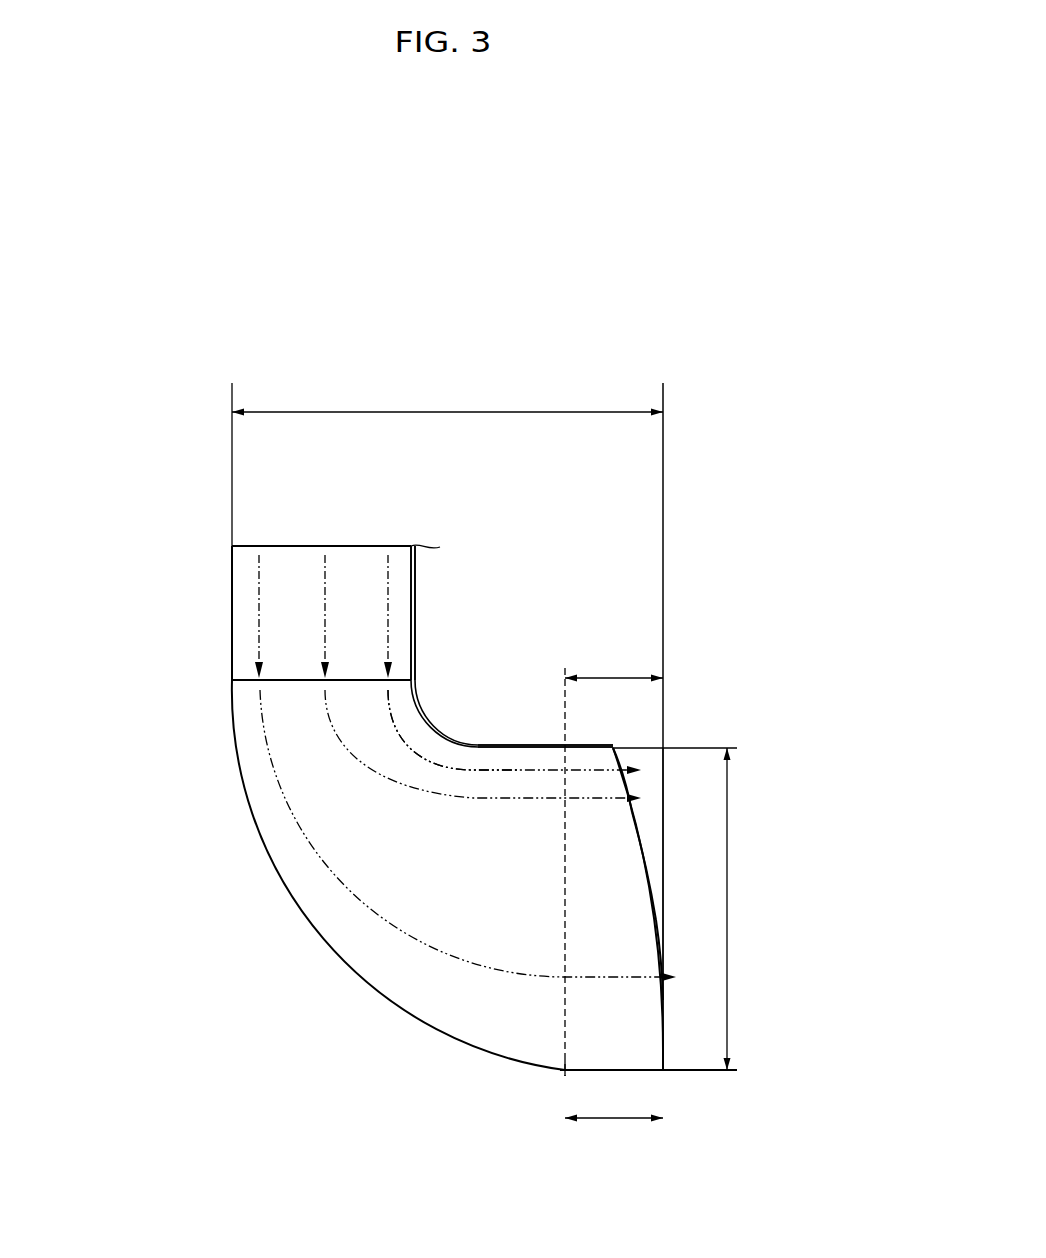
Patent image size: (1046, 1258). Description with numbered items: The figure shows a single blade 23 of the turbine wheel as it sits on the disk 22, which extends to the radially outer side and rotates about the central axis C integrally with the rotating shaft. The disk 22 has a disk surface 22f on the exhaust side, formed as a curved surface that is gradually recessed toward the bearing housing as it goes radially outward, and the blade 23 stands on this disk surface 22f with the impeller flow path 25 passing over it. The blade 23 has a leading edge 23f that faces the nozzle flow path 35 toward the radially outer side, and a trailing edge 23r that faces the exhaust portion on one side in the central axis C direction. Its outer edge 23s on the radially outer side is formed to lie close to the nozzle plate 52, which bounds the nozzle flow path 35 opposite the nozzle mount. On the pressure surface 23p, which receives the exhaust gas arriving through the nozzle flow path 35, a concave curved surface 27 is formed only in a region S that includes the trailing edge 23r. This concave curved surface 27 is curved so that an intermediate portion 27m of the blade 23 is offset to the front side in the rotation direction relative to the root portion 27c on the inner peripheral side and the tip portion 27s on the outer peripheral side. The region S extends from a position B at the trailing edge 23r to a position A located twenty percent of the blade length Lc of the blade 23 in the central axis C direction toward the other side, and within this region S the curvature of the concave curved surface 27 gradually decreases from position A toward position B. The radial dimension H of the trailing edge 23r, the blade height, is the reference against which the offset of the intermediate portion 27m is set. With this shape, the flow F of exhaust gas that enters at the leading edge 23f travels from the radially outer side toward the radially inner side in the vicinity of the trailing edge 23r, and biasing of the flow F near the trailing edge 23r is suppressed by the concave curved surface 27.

The nozzle flow path 35 is at (352, 583).
The blade 23 is at (433, 730).
The leading edge 23f is at (393, 677).
The outer edge 23s is at (527, 746).
The pressure surface 23p is at (627, 835).
The concave curved surface 27 is at (717, 909).
The tip portion 27s is at (617, 748).
The trailing edge 23r is at (652, 878).
The intermediate portion 27m is at (627, 930).
The root portion 27c is at (672, 1072).
The disk surface 22f is at (295, 899).
The disk 22 is at (332, 875).
The impeller flow path 25 is at (402, 955).
The nozzle plate 52 is at (482, 752).
The flow F is at (527, 774).
The blade length Lc is at (447, 398).
The region S is at (614, 662).
The radial dimension (blade height) H is at (737, 909).
The central axis C is at (615, 1123).
The position A is at (566, 1087).
The position B is at (659, 1087).